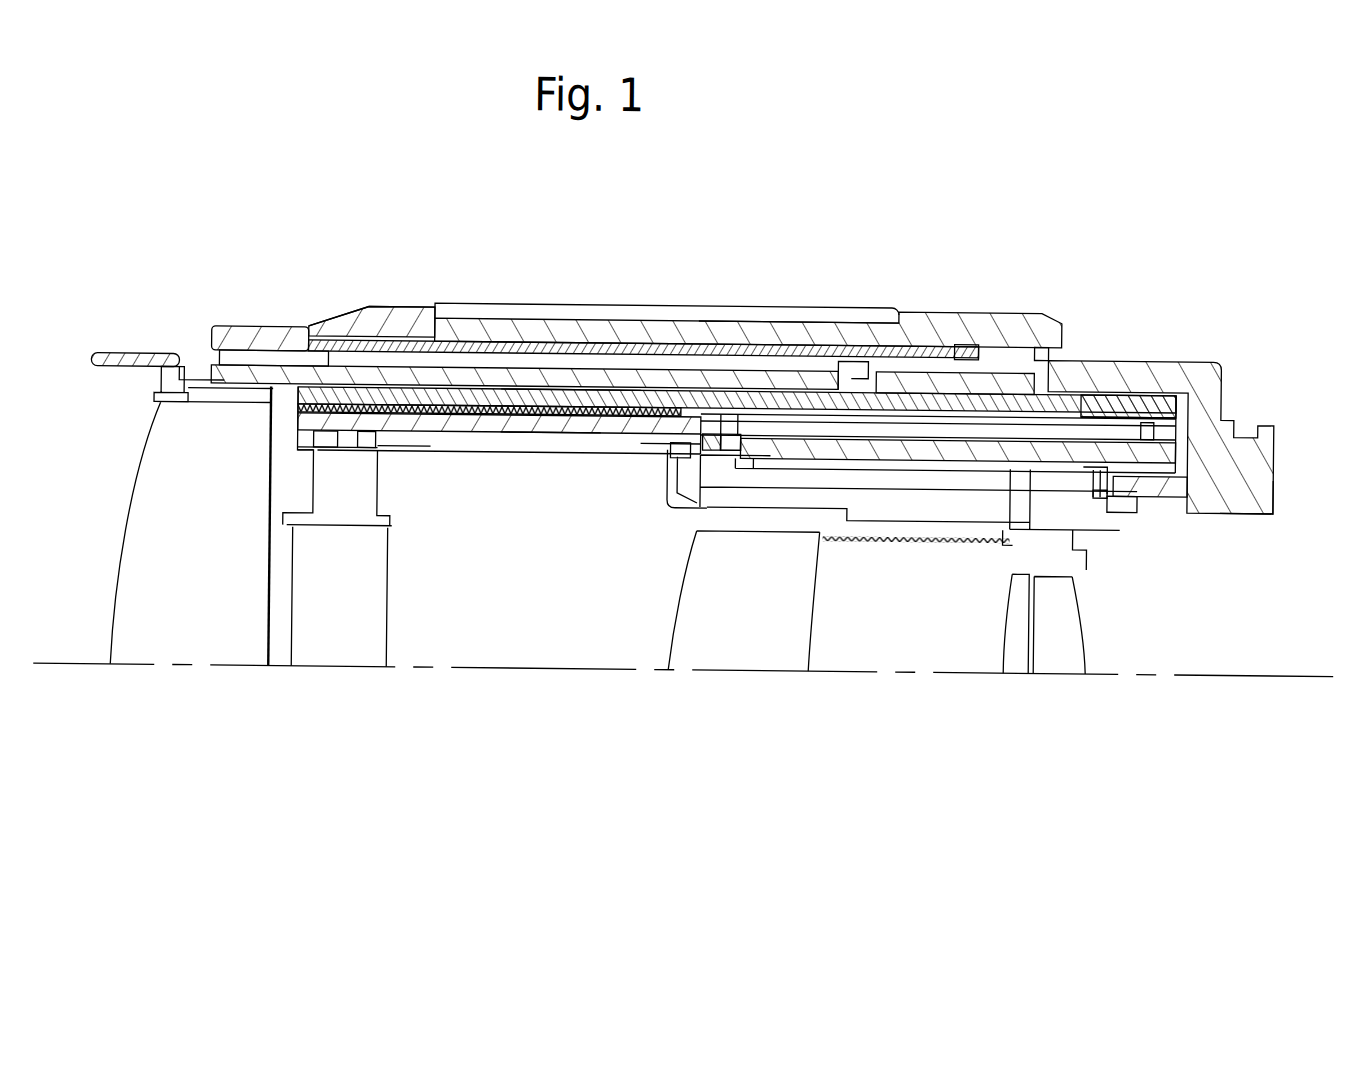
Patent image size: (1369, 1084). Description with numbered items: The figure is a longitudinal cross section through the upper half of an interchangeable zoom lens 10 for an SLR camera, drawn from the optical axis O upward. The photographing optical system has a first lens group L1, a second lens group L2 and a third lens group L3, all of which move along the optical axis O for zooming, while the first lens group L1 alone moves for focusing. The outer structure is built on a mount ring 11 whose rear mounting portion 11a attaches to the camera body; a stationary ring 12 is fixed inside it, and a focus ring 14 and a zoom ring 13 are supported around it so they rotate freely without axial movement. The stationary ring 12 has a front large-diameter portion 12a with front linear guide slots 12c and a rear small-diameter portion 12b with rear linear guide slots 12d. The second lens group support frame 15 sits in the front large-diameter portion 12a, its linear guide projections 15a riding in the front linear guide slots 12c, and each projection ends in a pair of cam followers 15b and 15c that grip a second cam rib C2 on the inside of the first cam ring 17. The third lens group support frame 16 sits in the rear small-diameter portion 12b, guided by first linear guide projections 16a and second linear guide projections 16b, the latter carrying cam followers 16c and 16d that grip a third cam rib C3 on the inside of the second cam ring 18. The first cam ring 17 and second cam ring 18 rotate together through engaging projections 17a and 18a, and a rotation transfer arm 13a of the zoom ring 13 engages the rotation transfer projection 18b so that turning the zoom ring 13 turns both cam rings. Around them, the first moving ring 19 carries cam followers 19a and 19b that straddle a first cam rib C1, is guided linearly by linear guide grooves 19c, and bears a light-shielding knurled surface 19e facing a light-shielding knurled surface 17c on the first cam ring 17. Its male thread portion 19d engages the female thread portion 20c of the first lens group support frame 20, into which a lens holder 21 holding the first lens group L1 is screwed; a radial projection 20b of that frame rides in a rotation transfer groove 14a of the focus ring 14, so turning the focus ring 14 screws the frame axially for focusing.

The zoom lens 10 is at (1236, 190).
The mount ring 11 is at (1127, 354).
The mounting portion 11a is at (1250, 508).
The stationary ring 12 is at (272, 426).
The front large-diameter portion 12a is at (249, 526).
The rear small-diameter portion 12b is at (1160, 508).
The front linear guide slots 12c is at (588, 454).
The rear linear guide slots 12d is at (930, 487).
The zoom ring 13 is at (418, 321).
The rotation transfer arm 13a is at (1068, 351).
The focus ring 14 is at (255, 334).
The rotation transfer grooves 14a is at (697, 325).
The second lens group support frame 15 is at (375, 474).
The linear guide projections 15a is at (400, 474).
The cam follower 15b is at (297, 454).
The cam follower 15c is at (447, 352).
The third lens group support frame 16 is at (897, 540).
The first linear guide projections 16a is at (697, 510).
The second linear guide projections 16b is at (1135, 526).
The cam follower 16c is at (1053, 466).
The cam follower 16d is at (1100, 496).
The first cam ring 17 is at (663, 434).
The engaging projections 17a is at (728, 414).
The light-shielding knurled surface 17c is at (553, 434).
The second cam ring 18 is at (813, 458).
The engaging projections 18a is at (731, 442).
The rotation transfer projection 18b is at (1013, 542).
The first moving ring 19 is at (1093, 400).
The cam follower 19a is at (1175, 396).
The cam follower 19b is at (1128, 417).
The linear guide grooves 19c is at (928, 405).
The male thread portion 19d is at (345, 332).
The light-shielding knurled surface 19e is at (572, 400).
The first lens group support frame 20 is at (185, 357).
The radial projections 20b is at (867, 357).
The female thread portion 20c is at (372, 316).
The lens holder 21 is at (180, 407).
The first cam ribs C1 is at (1143, 418).
The second cam ribs C2 is at (348, 452).
The third cam ribs C3 is at (1097, 499).
The first lens group L1 is at (173, 628).
The second lens group L2 is at (320, 656).
The third lens group L3 is at (1083, 695).
The optical axis O is at (1222, 670).